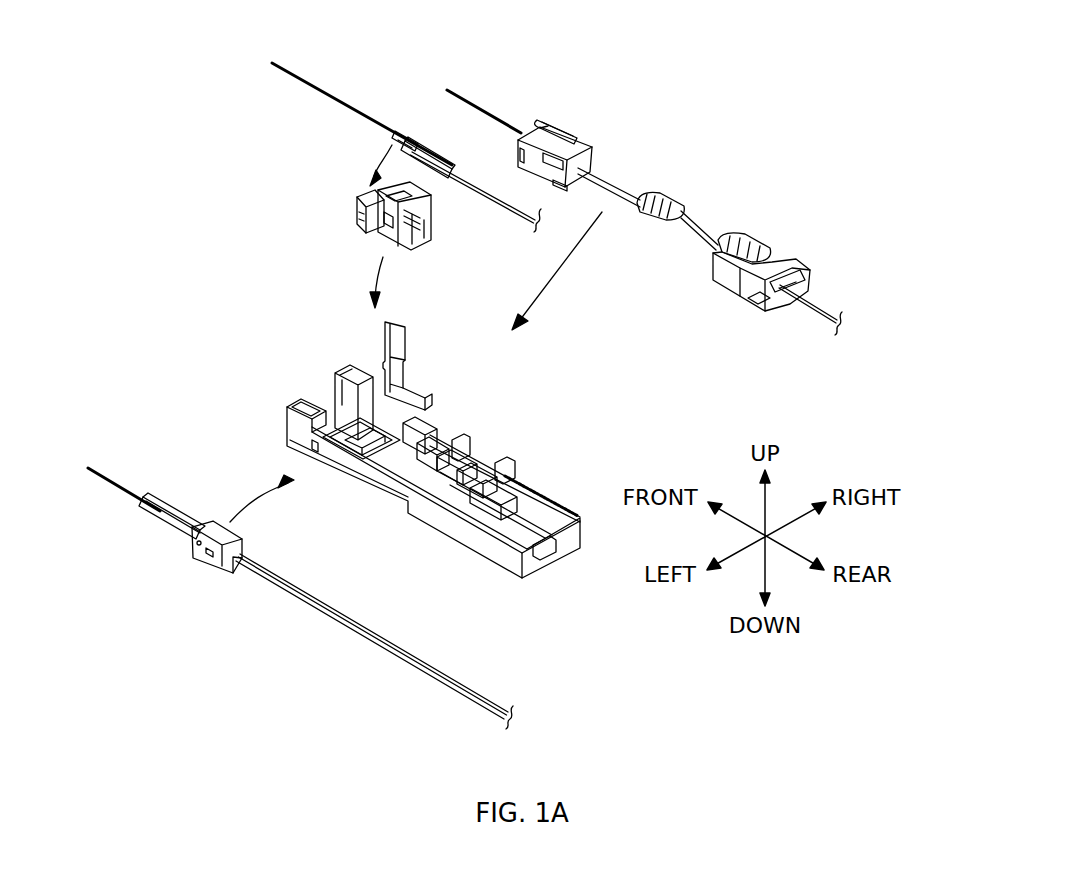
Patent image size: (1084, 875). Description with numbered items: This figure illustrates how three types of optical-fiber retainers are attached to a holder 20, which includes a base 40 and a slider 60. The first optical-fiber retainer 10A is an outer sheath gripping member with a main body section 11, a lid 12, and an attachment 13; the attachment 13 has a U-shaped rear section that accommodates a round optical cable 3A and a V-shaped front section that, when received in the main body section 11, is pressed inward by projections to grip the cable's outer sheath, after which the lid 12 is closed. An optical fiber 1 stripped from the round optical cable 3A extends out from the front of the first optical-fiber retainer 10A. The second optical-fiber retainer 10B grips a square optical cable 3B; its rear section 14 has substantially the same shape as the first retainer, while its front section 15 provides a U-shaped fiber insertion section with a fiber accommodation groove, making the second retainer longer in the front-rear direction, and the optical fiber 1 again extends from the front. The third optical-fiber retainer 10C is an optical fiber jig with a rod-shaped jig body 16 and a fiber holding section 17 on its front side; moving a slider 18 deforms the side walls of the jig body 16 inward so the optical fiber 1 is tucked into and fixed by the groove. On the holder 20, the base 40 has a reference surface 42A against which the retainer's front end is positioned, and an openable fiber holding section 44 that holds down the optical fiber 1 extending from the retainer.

The optical fiber 1 is at (322, 86).
The round optical cable 3A is at (470, 177).
The square optical cable 3B is at (288, 594).
The first optical-fiber retainer 10A is at (450, 212).
The second optical-fiber retainer 10B is at (320, 611).
The third optical-fiber retainer 10C is at (680, 183).
The main body section 11 is at (426, 237).
The lid 12 is at (420, 214).
The attachment 13 is at (430, 167).
The rear section 14 is at (198, 558).
The front section 15 is at (157, 522).
The jig body 16 is at (620, 182).
The fiber holding section 17 is at (570, 128).
The slider 18 is at (748, 243).
The holder 20 is at (443, 450).
The base 40 is at (543, 528).
The reference surface 42A is at (357, 437).
The fiber holding section 44 is at (403, 363).
The slider 60 is at (467, 466).